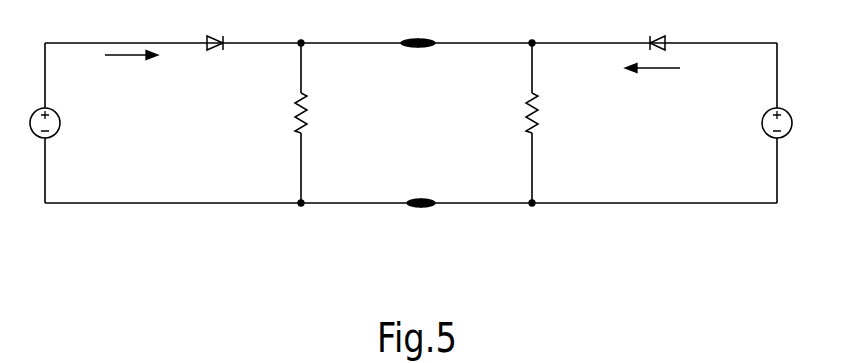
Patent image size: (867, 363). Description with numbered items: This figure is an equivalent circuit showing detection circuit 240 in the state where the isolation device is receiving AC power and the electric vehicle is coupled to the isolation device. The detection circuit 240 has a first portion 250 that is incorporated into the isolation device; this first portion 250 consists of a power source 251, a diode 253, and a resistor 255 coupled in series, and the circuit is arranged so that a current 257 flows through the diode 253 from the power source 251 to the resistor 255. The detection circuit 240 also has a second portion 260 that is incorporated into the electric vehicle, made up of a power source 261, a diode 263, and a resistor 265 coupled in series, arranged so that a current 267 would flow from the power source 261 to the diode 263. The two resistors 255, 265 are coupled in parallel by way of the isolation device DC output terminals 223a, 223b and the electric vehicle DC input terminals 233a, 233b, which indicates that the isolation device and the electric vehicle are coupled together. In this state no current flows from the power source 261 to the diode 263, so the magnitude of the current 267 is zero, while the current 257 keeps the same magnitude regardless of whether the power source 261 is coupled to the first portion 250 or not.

The detection circuit 240 is at (414, 164).
The isolation device DC output terminal 223a is at (403, 47).
The isolation device DC output terminal 223b is at (408, 200).
The electric vehicle DC input terminal 233a is at (432, 47).
The electric vehicle DC input terminal 233b is at (435, 200).
The first portion of detection circuit 250 is at (168, 147).
The power source 251 is at (61, 123).
The diode 253 is at (217, 51).
The resistor 255 is at (294, 118).
The current 257 is at (133, 58).
The second portion of detection circuit 260 is at (659, 147).
The power source 261 is at (761, 123).
The diode 263 is at (664, 47).
The resistor 265 is at (538, 127).
The current 267 is at (661, 71).